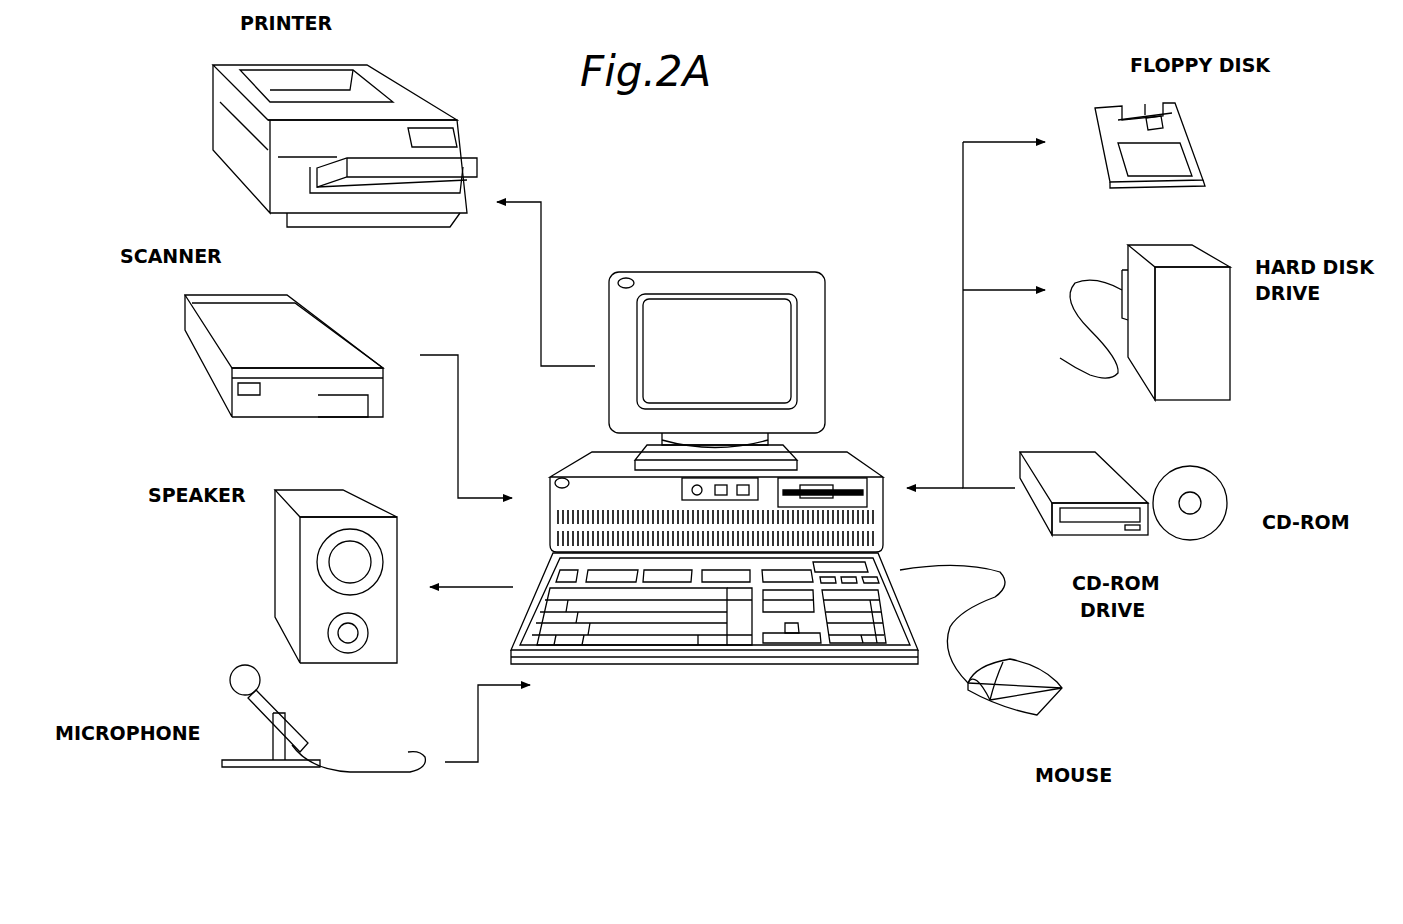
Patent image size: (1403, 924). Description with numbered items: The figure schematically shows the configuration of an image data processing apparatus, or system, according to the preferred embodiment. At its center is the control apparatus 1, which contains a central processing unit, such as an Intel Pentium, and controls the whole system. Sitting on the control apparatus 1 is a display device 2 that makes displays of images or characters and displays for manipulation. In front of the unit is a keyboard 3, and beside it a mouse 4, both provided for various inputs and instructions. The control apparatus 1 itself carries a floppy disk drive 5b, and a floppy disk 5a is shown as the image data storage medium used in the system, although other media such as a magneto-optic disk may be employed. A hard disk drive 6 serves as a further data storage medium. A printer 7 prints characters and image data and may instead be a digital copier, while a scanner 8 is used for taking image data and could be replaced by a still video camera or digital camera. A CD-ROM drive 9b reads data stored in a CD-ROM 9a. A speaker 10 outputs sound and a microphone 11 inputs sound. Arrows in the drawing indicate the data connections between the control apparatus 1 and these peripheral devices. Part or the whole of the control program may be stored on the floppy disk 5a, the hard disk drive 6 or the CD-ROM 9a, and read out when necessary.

The control apparatus 1 is at (700, 486).
The display device 2 is at (608, 340).
The keyboard 3 is at (545, 582).
The mouse 4 is at (1005, 690).
The floppy disk 5a is at (1178, 160).
The floppy disk drive 5b is at (850, 480).
The hard disk drive 6 is at (1193, 255).
The printer 7 is at (423, 108).
The scanner 8 is at (320, 338).
The CD-ROM 9a is at (1212, 483).
The CD-ROM drive 9b is at (1068, 467).
The speaker 10 is at (338, 498).
The microphone 11 is at (295, 728).